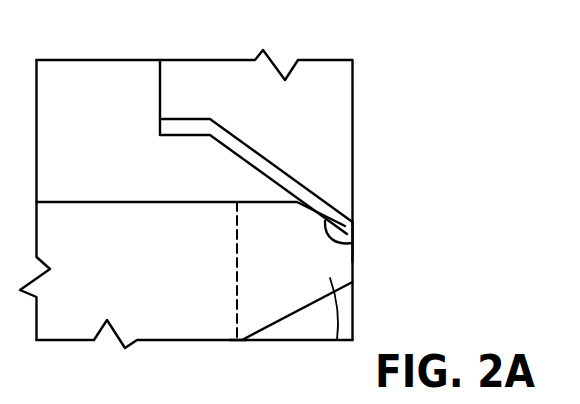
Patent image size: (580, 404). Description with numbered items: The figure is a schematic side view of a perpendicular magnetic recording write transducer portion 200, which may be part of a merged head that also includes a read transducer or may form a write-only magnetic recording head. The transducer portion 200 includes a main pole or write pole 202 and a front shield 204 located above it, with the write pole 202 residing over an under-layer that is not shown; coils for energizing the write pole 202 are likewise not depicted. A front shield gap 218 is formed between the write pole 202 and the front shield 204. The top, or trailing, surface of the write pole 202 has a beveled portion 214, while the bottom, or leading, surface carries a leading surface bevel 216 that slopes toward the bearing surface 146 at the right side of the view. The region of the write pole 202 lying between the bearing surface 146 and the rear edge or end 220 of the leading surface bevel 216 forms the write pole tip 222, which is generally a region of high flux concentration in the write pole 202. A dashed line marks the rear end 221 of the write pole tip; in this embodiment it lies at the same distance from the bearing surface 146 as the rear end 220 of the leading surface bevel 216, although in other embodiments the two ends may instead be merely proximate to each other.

The PMR transducer portion 200 is at (303, 43).
The write pole 202 is at (123, 351).
The front shield 204 is at (328, 110).
The bearing surface 146 is at (353, 258).
The front shield gap 218 is at (355, 233).
The beveled portion 214 is at (352, 245).
The rear end of the write pole tip 221 is at (237, 242).
The rear edge of leading surface bevel 220 is at (242, 343).
The leading surface bevel 216 is at (285, 320).
The write pole tip 222 is at (337, 340).